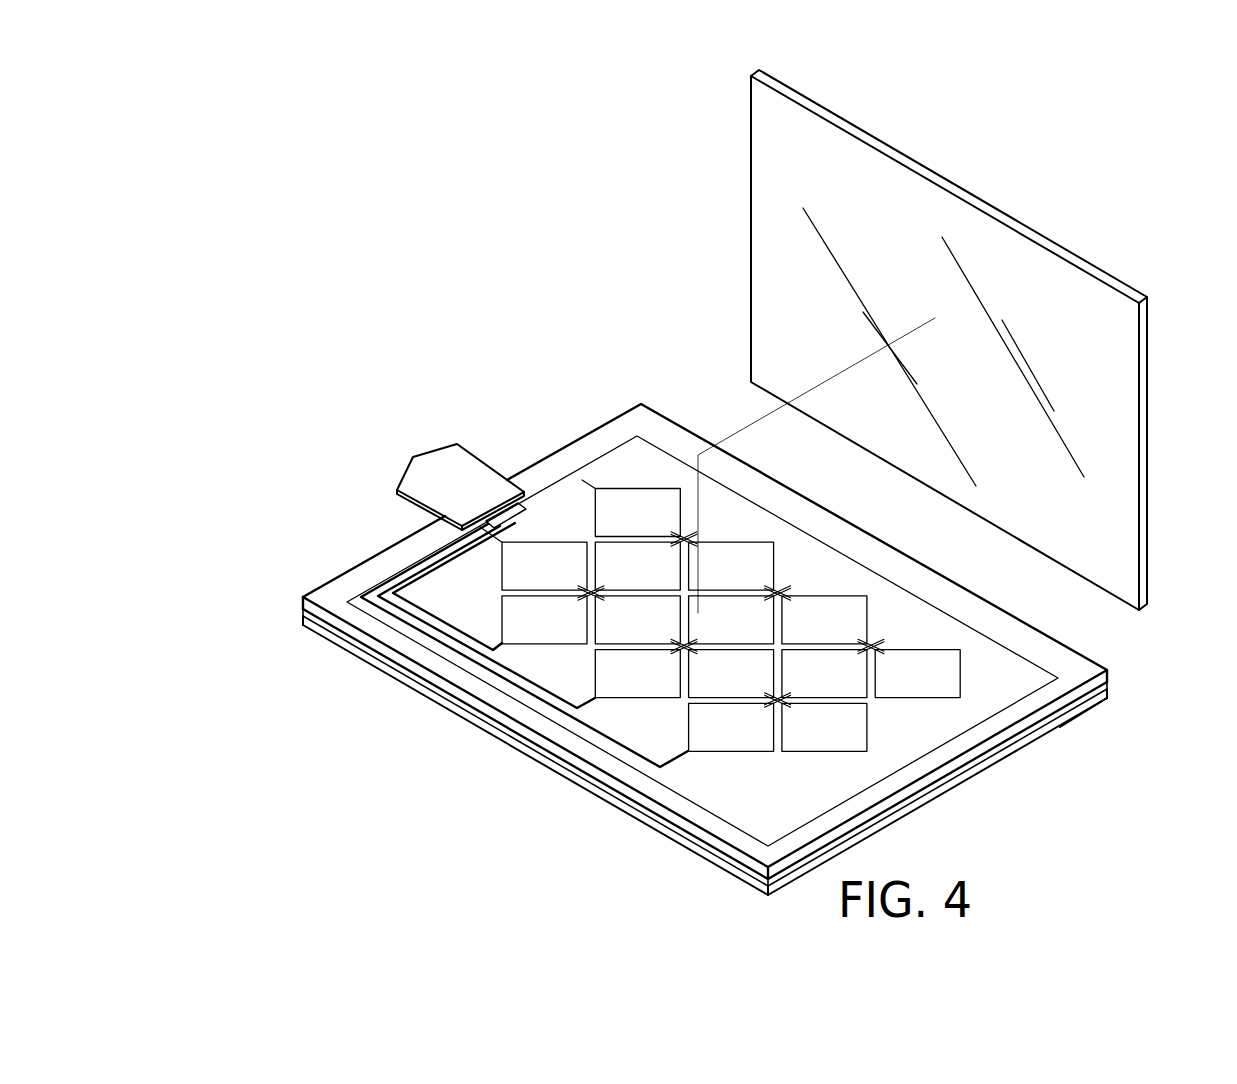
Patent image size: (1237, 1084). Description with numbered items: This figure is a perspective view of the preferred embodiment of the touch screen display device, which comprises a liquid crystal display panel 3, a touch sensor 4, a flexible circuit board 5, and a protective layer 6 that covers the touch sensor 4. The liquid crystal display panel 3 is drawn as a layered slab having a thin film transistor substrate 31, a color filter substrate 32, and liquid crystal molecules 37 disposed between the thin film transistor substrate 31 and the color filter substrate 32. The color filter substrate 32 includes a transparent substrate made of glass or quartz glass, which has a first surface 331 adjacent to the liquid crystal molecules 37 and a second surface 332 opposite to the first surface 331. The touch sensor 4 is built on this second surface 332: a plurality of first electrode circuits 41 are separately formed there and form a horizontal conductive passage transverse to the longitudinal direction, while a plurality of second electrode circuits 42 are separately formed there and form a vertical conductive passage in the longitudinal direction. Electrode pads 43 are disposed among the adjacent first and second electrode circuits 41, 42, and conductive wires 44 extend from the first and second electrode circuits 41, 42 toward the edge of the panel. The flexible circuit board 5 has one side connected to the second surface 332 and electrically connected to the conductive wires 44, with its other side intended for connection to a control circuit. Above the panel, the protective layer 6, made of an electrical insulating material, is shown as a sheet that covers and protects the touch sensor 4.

The liquid crystal display panel 3 is at (702, 649).
The thin film transistor substrate 31 is at (312, 625).
The color filter substrate 32 is at (292, 599).
The liquid crystal molecules 37 is at (307, 616).
The first surface 331 is at (1090, 695).
The second surface 332 is at (1030, 648).
The touch sensor 4 is at (679, 673).
The first electrode circuits 41 is at (853, 728).
The second electrode circuits 42 is at (710, 726).
The electrode pads 43 is at (777, 706).
The conductive wires 44 is at (500, 688).
The flexible circuit board 5 is at (465, 470).
The protective layer 6 is at (1121, 462).